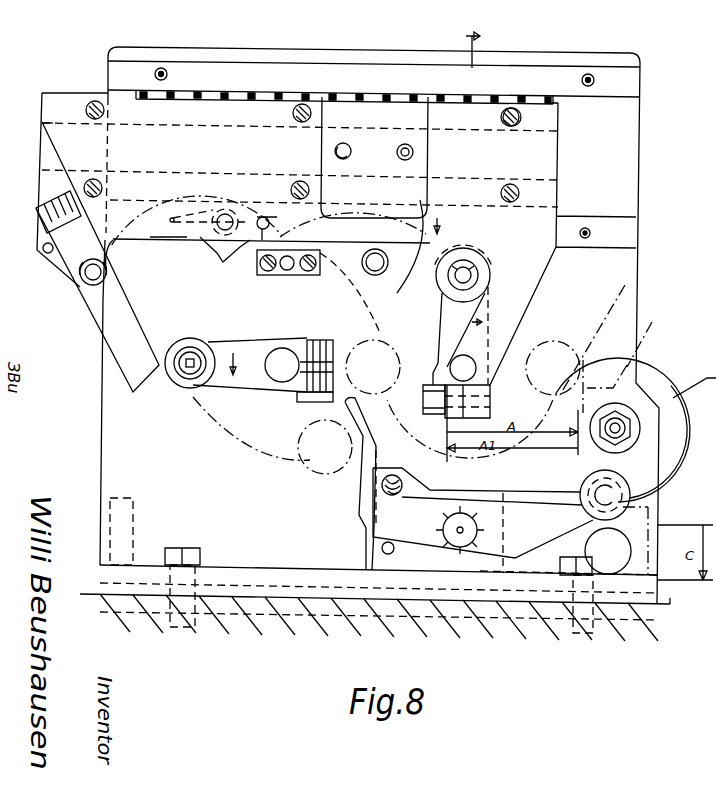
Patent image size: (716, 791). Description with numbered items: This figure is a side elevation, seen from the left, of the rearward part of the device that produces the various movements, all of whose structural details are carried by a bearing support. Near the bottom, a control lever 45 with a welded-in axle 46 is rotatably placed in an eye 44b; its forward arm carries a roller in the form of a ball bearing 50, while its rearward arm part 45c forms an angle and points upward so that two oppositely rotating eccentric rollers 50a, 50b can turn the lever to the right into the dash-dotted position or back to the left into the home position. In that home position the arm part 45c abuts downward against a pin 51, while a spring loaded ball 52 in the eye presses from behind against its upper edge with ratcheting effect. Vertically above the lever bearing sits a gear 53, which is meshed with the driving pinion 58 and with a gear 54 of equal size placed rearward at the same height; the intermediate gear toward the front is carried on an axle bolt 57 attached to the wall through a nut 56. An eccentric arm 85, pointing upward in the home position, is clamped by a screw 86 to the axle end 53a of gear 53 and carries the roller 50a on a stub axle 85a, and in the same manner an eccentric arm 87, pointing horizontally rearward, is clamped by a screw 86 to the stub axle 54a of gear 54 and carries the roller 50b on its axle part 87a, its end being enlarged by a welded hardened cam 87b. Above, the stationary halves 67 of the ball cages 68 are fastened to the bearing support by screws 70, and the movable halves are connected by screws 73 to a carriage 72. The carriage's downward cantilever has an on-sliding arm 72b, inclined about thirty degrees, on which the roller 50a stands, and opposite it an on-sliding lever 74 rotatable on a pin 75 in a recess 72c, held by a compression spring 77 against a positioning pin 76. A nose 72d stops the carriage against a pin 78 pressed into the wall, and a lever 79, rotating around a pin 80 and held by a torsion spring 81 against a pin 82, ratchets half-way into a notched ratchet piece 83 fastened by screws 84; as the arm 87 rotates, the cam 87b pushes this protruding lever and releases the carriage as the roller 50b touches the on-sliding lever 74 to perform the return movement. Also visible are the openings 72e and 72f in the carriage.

The stationary halves 67 is at (156, 46).
The ball cage 68 is at (344, 58).
The carriage 72 is at (376, 327).
The cover plate 72e is at (374, 116).
The opening 72f is at (410, 88).
The screws 73 is at (511, 73).
The screws 70 is at (588, 53).
The recess 72c is at (57, 146).
The compression spring 77 is at (69, 118).
The positioning pin 76 is at (40, 267).
The pin 75 is at (78, 286).
The on-sliding lever 74 is at (98, 257).
The lever 79 is at (175, 253).
The pin 80 is at (201, 267).
The nose 72d is at (215, 252).
The torsion spring 81 is at (243, 268).
The pin 82 is at (280, 284).
The notched ratchet piece 83 is at (281, 287).
The screws 84 is at (309, 287).
The pin 78 is at (369, 284).
The driving pinion 58 is at (445, 275).
The stub axle 85a is at (491, 275).
The roller 50a is at (447, 282).
The eccentric arm 85 is at (445, 336).
The axle end 53a is at (438, 363).
The on-sliding arm 72b is at (541, 360).
The hardened cam 87b is at (156, 398).
The roller 50b is at (186, 415).
The axle part 87a is at (159, 423).
The eccentric arm 87 is at (197, 417).
The stub axle 54a is at (263, 424).
The gear 54 is at (250, 419).
The screw 86 is at (371, 420).
The gear 53 is at (467, 435).
The ball bearing roller 50 is at (566, 493).
The axle bolt 57 is at (653, 456).
The nut 56 is at (646, 457).
The arm part 45c is at (315, 574).
The spring loaded ball 52 is at (334, 536).
The pin 51 is at (370, 608).
The eye 44b is at (433, 600).
The axle 46 is at (460, 590).
The control lever 45 is at (483, 572).